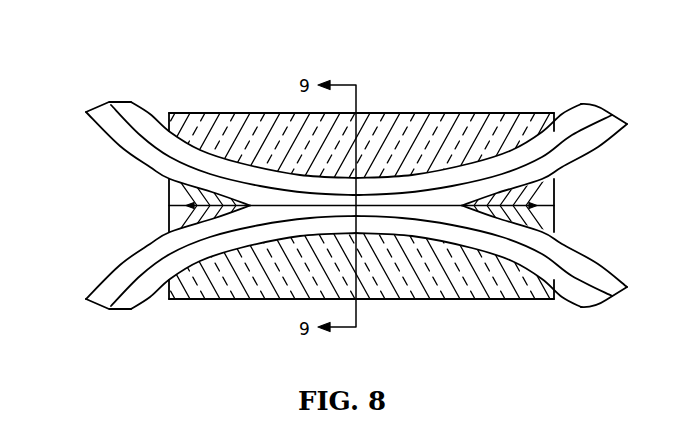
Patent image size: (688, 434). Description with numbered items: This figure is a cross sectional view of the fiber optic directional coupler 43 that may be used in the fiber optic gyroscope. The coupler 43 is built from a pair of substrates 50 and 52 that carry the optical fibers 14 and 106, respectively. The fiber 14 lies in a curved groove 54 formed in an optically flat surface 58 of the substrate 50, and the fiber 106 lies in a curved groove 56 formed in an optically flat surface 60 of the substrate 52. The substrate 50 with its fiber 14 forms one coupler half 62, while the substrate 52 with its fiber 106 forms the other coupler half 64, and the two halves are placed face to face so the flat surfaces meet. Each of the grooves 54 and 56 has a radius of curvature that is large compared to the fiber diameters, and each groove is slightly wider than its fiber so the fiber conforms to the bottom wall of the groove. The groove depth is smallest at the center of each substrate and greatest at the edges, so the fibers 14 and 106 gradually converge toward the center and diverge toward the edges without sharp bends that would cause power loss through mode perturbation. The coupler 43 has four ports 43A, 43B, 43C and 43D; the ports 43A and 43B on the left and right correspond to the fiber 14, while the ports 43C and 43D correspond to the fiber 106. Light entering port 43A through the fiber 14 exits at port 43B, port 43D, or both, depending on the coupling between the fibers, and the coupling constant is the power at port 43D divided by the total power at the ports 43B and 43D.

The optical fiber 14 is at (340, 301).
The fiber optic directional coupler 43 is at (339, 213).
The port 43A is at (98, 312).
The port 43B is at (613, 322).
The port 43C is at (102, 97).
The port 43D is at (612, 95).
The substrate 50 is at (392, 300).
The substrate 52 is at (270, 112).
The curved groove 54 is at (175, 275).
The curved groove 56 is at (581, 155).
The optically flat surface 58 is at (553, 190).
The optically flat surface 60 is at (555, 227).
The coupler half 62 is at (475, 330).
The coupler half 64 is at (468, 72).
The optical fiber 106 is at (334, 118).